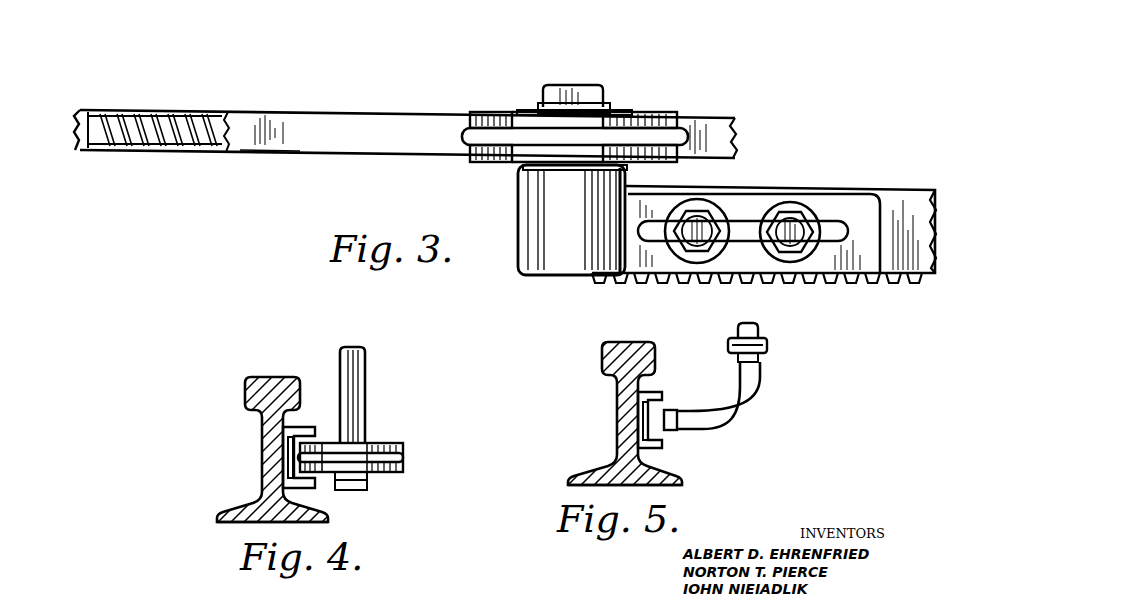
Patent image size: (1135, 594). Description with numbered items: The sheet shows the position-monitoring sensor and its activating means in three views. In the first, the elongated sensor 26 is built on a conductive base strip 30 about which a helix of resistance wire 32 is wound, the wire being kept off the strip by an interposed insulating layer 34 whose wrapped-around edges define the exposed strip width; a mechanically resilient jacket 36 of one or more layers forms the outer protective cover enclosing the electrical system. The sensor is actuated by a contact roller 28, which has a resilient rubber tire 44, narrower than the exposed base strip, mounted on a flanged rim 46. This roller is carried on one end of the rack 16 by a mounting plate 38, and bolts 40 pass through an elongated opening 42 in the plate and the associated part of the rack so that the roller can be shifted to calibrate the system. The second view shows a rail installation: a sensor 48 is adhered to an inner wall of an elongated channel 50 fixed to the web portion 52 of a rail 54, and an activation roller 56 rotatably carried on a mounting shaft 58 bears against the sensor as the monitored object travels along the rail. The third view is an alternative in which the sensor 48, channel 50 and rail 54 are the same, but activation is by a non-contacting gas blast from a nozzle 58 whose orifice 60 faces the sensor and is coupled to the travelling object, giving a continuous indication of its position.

In FIG. 3, the rack 16 is at (910, 196).
In FIG. 3, the sensor 26 is at (328, 113).
In FIG. 3, the contact roller 28 is at (510, 122).
In FIG. 3, the conductive base strip 30 is at (75, 140).
In FIG. 3, the resistance wire 32 is at (112, 114).
In FIG. 3, the insulating layer 34 is at (108, 147).
In FIG. 3, the resilient jacket 36 is at (290, 153).
In FIG. 3, the mounting plate 38 is at (756, 200).
In FIG. 3, the bolts 40 is at (775, 247).
In FIG. 3, the elongated opening 42 is at (829, 222).
In FIG. 3, the tire 44 is at (670, 138).
In FIG. 3, the flanged rim 46 is at (680, 163).
In FIG. 4, the sensor 48 is at (285, 447).
In FIG. 5, the sensor 48 is at (650, 430).
In FIG. 4, the channel 50 is at (298, 428).
In FIG. 5, the channel 50 is at (656, 396).
In FIG. 4, the web portion 52 is at (310, 503).
In FIG. 5, the web portion 52 is at (627, 457).
In FIG. 4, the rail 54 is at (263, 378).
In FIG. 5, the rail 54 is at (607, 343).
In FIG. 4, the activation roller 56 is at (403, 449).
In FIG. 4, the mounting shaft 58 is at (367, 378).
In FIG. 5, the mounting shaft 58 is at (740, 400).
In FIG. 5, the orifice 60 is at (672, 412).